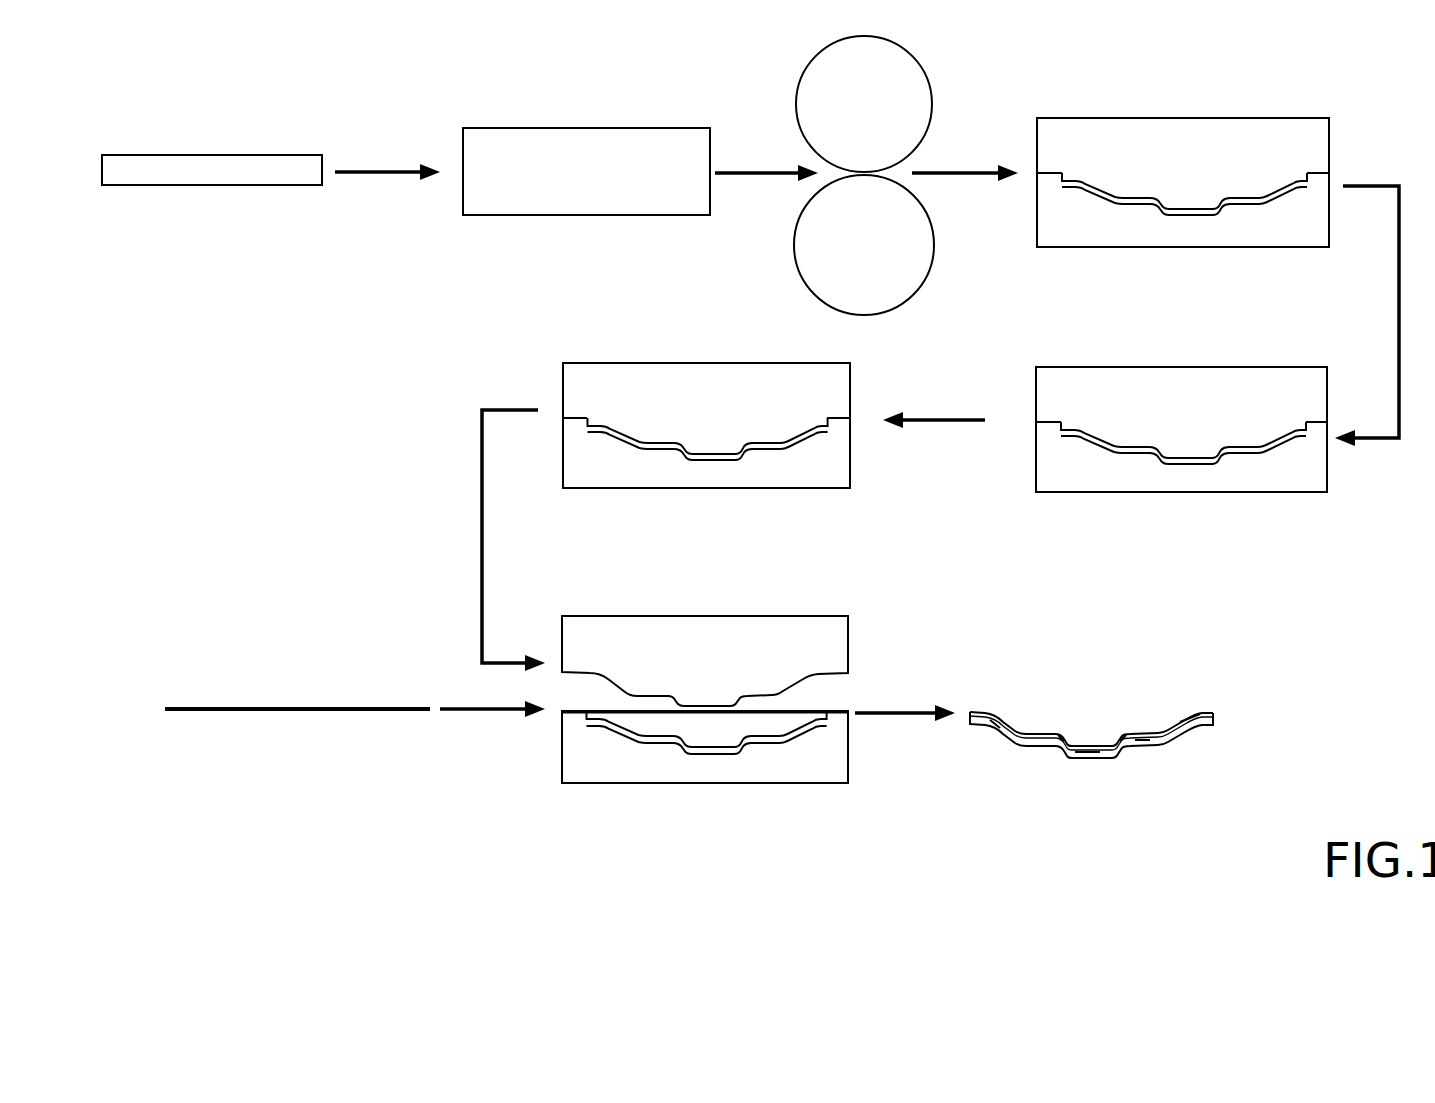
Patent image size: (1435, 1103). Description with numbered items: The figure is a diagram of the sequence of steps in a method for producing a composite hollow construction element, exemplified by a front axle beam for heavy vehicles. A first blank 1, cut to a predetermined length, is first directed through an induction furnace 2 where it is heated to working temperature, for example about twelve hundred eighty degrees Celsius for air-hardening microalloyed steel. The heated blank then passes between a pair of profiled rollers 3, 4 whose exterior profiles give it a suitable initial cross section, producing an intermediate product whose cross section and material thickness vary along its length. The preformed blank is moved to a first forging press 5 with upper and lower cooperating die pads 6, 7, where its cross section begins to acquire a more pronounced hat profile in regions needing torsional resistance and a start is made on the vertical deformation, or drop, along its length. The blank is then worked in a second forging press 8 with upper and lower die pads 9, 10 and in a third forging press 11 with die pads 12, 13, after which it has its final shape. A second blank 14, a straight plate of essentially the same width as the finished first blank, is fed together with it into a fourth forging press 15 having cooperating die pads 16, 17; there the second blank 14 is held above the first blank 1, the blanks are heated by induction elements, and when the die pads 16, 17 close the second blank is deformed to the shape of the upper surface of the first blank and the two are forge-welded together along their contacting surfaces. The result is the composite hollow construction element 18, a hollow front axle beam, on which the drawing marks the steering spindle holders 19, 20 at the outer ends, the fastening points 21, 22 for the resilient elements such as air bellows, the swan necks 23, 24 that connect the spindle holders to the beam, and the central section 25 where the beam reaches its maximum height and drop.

The first blank 1 is at (205, 165).
The induction furnace 2 is at (498, 198).
The profiled roller 3 is at (812, 103).
The profiled roller 4 is at (807, 238).
The first forging press 5 is at (1154, 166).
The upper die pad 6 is at (1081, 140).
The lower die pad 7 is at (1068, 216).
The second forging press 8 is at (1170, 410).
The upper die pad 9 is at (1087, 380).
The lower die pad 10 is at (1073, 475).
The third forging press 11 is at (723, 425).
The die pad 12 is at (612, 378).
The lower die of third mold 13 is at (597, 473).
The second blank 14 is at (237, 708).
The fourth forging press 15 is at (700, 678).
The die pad 16 is at (585, 632).
The die pad 17 is at (578, 765).
The composite hollow construction element 18 is at (1109, 714).
The steering spindle holder 19 is at (975, 726).
The steering spindle holder 20 is at (1195, 727).
The fastening point 21 is at (1070, 740).
The fastening point 22 is at (1117, 742).
The swan neck 23 is at (997, 733).
The swan neck 24 is at (1147, 742).
The central section 25 is at (1083, 752).